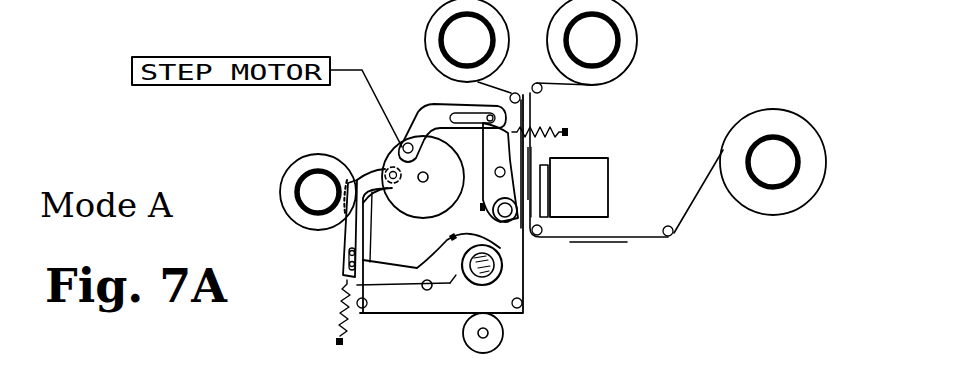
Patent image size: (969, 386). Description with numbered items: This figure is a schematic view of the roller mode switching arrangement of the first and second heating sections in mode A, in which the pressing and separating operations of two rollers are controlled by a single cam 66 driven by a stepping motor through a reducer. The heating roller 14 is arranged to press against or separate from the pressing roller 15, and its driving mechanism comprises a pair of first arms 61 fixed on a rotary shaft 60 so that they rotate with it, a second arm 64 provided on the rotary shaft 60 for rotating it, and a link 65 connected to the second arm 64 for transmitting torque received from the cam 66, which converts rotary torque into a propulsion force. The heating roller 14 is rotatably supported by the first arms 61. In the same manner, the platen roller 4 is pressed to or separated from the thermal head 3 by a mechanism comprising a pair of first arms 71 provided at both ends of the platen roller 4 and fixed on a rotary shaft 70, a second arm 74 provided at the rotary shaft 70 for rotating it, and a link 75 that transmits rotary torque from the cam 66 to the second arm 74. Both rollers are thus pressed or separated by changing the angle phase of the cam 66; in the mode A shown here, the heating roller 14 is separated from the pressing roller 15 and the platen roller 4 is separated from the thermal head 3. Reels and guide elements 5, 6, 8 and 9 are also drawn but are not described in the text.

The thermal head 3 is at (548, 197).
The platen roller 4 is at (483, 212).
The reel 5 is at (637, 36).
The reel 6 is at (818, 126).
The reel 8 is at (425, 28).
The capstan pulley 9 is at (290, 217).
The heating roller 14 is at (503, 268).
The pressing roller 15 is at (500, 342).
The rotary shaft 60 is at (425, 290).
The first arm 61 is at (450, 283).
The second arm 64 is at (370, 313).
The link 65 is at (343, 243).
The cam 66 is at (390, 157).
The rotary shaft 70 is at (505, 170).
The first arm 71 is at (540, 227).
The second arm 74 is at (520, 124).
The link 75 is at (425, 116).